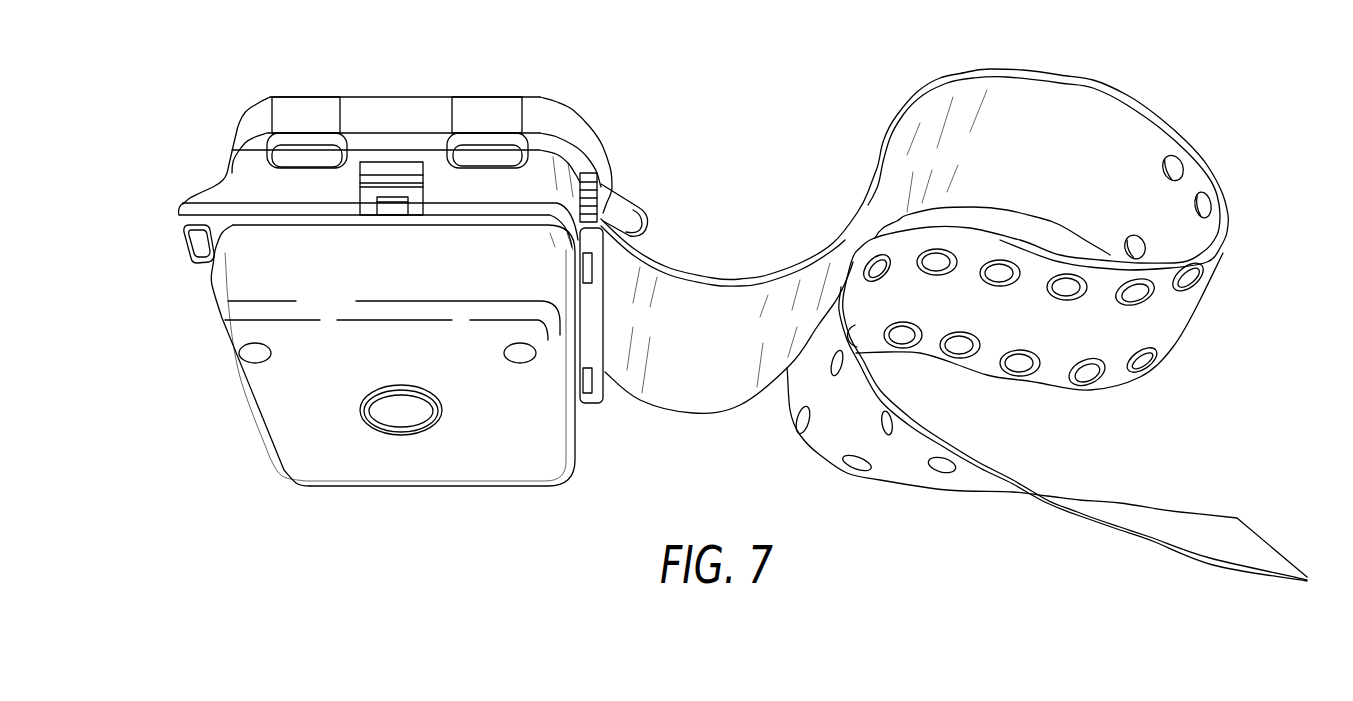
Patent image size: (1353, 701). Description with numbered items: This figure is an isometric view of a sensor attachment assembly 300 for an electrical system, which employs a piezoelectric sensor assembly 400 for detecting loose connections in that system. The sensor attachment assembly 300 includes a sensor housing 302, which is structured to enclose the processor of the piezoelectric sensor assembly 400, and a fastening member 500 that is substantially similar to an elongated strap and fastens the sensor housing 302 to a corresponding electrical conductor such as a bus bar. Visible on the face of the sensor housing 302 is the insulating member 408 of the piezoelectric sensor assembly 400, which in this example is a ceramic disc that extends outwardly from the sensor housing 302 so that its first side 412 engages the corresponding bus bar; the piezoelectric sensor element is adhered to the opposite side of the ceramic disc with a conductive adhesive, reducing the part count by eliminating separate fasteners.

The sensor attachment assembly 300 is at (258, 538).
The sensor housing 302 is at (235, 280).
The piezoelectric sensor assembly 400 is at (429, 439).
The insulating member 408 is at (455, 414).
The first side 412 is at (396, 405).
The fastening member 500 is at (1067, 112).